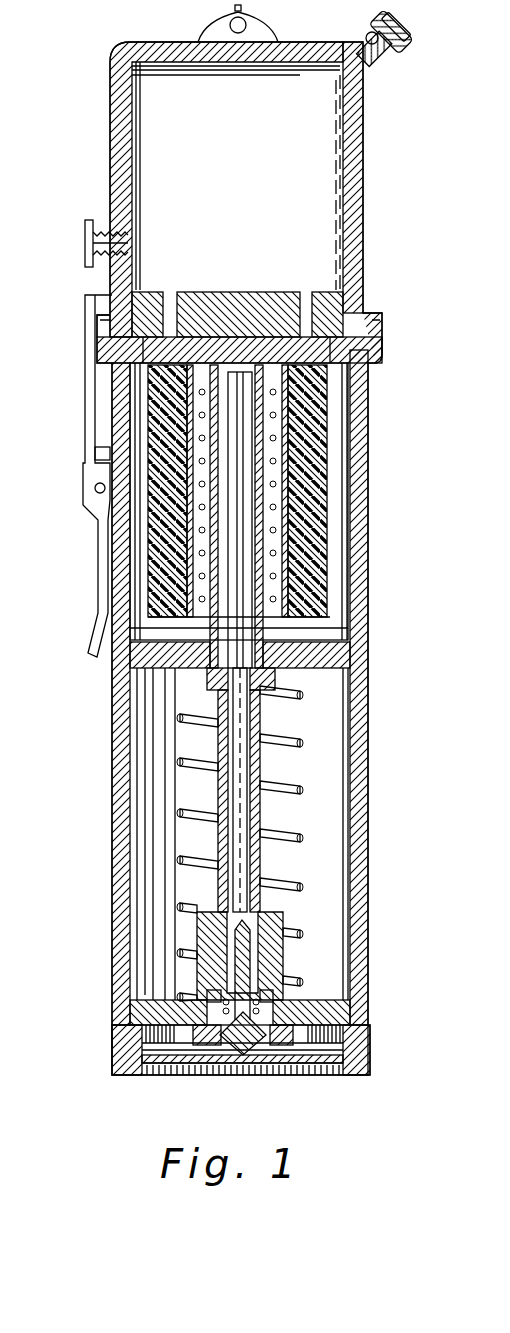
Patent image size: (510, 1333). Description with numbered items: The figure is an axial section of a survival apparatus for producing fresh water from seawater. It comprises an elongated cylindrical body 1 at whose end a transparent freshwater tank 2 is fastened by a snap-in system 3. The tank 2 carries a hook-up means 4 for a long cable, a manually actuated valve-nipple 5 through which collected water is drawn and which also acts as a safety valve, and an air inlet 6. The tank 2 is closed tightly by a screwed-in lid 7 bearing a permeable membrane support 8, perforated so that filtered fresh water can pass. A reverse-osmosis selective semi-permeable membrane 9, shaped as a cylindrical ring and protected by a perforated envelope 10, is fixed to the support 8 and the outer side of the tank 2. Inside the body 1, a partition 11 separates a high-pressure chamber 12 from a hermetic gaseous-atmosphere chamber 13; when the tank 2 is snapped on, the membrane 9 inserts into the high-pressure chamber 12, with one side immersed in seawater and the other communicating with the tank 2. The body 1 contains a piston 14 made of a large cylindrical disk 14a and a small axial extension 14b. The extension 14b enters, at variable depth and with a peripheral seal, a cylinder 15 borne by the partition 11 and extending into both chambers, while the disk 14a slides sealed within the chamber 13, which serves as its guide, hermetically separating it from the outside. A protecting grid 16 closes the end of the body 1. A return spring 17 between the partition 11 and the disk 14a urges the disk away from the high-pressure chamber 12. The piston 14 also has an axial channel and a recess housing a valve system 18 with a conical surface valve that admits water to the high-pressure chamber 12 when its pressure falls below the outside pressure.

The cylindrical body 1 is at (397, 593).
The freshwater tank 2 is at (352, 170).
The snap-in system 3 is at (85, 358).
The hook-up means 4 is at (230, 25).
The valve-nipple 5 is at (398, 44).
The air inlet 6 is at (85, 245).
The lid 7 is at (265, 300).
The permeable membrane support 8 is at (190, 357).
The reverse-osmosis selective semi-permeable membrane 9 is at (330, 478).
The perforated envelope 10 is at (327, 422).
The partition 11 is at (352, 652).
The high-pressure chamber 12 is at (352, 548).
The gaseous-atmosphere chamber 13 is at (347, 852).
The piston 14 is at (277, 953).
The cylindrical disk 14a is at (153, 993).
The axial extension 14b is at (260, 760).
The cylinder 15 is at (252, 637).
The protecting grid 16 is at (293, 1065).
The return spring 17 is at (297, 883).
The valve system 18 is at (243, 1052).